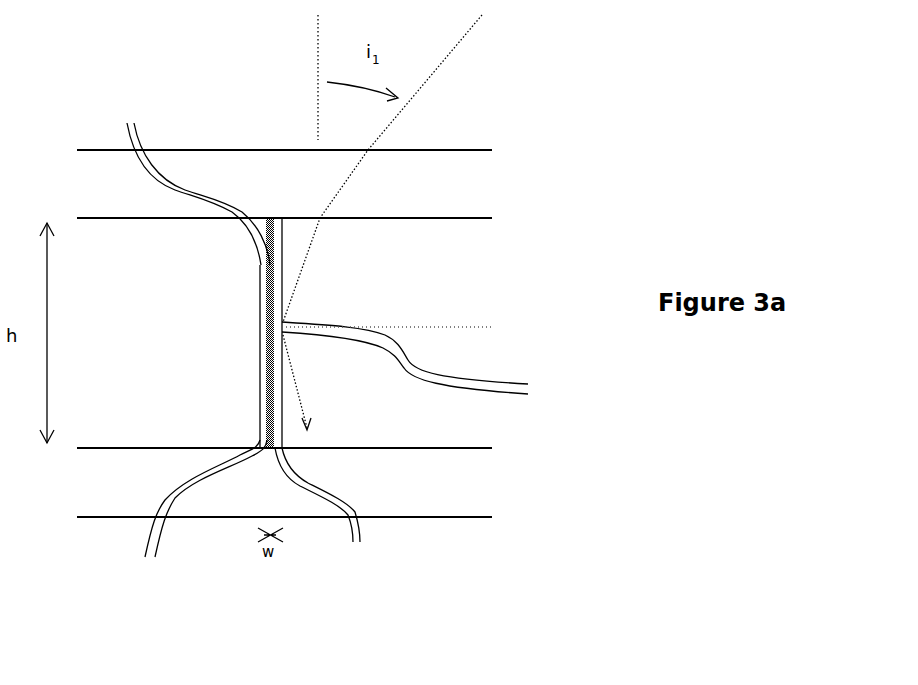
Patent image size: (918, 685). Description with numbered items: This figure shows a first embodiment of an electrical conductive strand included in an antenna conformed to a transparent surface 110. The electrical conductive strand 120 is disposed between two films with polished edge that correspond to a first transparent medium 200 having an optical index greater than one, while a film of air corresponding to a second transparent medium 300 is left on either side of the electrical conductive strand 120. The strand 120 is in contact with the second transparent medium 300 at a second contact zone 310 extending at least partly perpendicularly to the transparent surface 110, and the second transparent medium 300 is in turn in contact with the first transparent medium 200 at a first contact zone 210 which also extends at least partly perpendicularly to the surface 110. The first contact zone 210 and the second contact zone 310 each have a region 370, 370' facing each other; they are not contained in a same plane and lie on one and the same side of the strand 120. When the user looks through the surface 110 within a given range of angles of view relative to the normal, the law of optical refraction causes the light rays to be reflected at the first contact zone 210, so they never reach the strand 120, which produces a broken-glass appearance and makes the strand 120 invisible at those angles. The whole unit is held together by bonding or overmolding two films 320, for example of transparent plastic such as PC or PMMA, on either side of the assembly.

The transparent surface 110 is at (478, 517).
The electrical conductive strand 120 is at (271, 222).
The first transparent medium 200 is at (128, 420).
The first contact zone 210 is at (202, 512).
The second transparent medium 300 is at (183, 174).
The second contact zone 310 is at (318, 507).
The film 320 is at (472, 177).
The region facing each other 370 is at (425, 373).
The region facing each other 370' is at (428, 357).